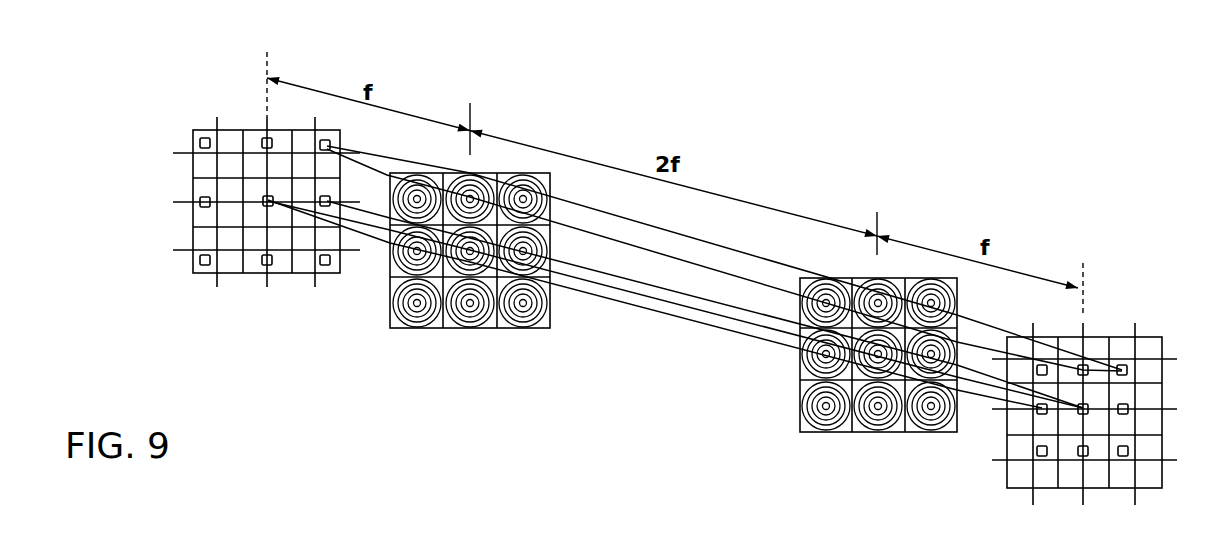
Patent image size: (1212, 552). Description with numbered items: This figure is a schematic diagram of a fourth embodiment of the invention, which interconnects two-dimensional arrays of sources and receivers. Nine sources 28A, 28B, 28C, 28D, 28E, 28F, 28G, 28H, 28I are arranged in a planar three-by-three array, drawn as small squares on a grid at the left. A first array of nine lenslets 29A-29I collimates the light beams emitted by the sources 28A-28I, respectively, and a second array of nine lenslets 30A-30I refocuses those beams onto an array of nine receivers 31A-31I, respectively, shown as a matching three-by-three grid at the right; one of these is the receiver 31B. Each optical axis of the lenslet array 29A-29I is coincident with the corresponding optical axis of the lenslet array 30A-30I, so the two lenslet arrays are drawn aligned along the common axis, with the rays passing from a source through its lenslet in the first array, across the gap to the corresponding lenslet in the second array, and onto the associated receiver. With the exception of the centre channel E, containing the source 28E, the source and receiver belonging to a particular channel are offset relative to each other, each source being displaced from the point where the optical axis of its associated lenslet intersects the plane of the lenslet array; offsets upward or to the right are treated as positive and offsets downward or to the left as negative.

The source 28A is at (205, 140).
The source 28B is at (265, 140).
The source 28C is at (324, 140).
The source 28D is at (200, 202).
The source 28E is at (268, 200).
The source 28F is at (332, 200).
The source 28G is at (200, 259).
The source 28H is at (261, 268).
The source 28I is at (330, 268).
The first array of lenslets 29A-29I is at (533, 345).
The second array of lenslets 30A-30I is at (785, 403).
The array of receivers 31A-31I is at (997, 471).
The receiver 31B is at (686, 546).